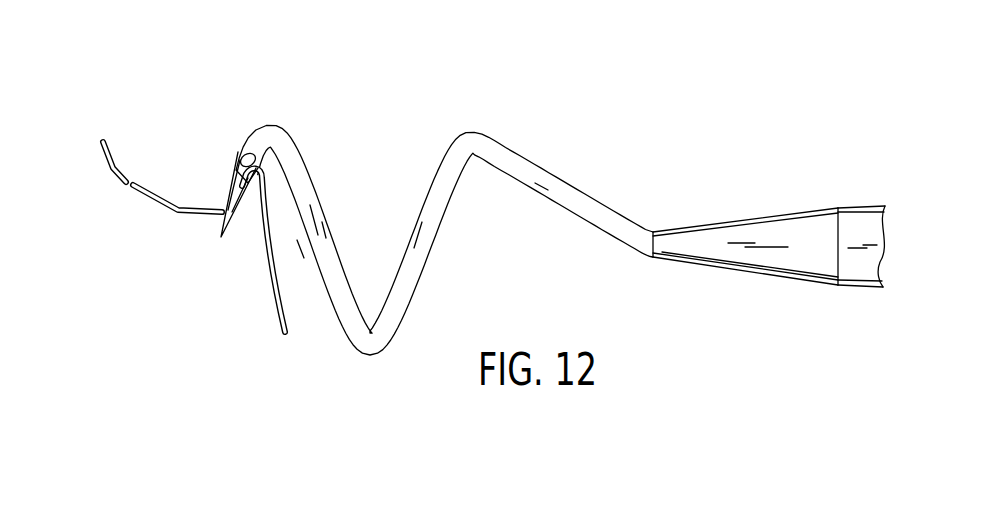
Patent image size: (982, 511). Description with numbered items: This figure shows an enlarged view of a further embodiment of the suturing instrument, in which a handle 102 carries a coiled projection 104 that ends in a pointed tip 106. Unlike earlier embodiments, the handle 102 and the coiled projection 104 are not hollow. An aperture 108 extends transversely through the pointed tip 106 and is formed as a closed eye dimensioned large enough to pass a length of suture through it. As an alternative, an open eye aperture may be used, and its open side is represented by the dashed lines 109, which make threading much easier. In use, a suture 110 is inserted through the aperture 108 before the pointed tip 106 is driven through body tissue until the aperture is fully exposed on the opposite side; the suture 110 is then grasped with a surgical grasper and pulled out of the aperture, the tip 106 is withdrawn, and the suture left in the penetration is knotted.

The handle 102 is at (852, 225).
The coiled projection 104 is at (457, 150).
The pointed tip 106 is at (224, 223).
The aperture 108 is at (243, 148).
The open side of open eye aperture 109 is at (219, 213).
The suture 110 is at (282, 303).